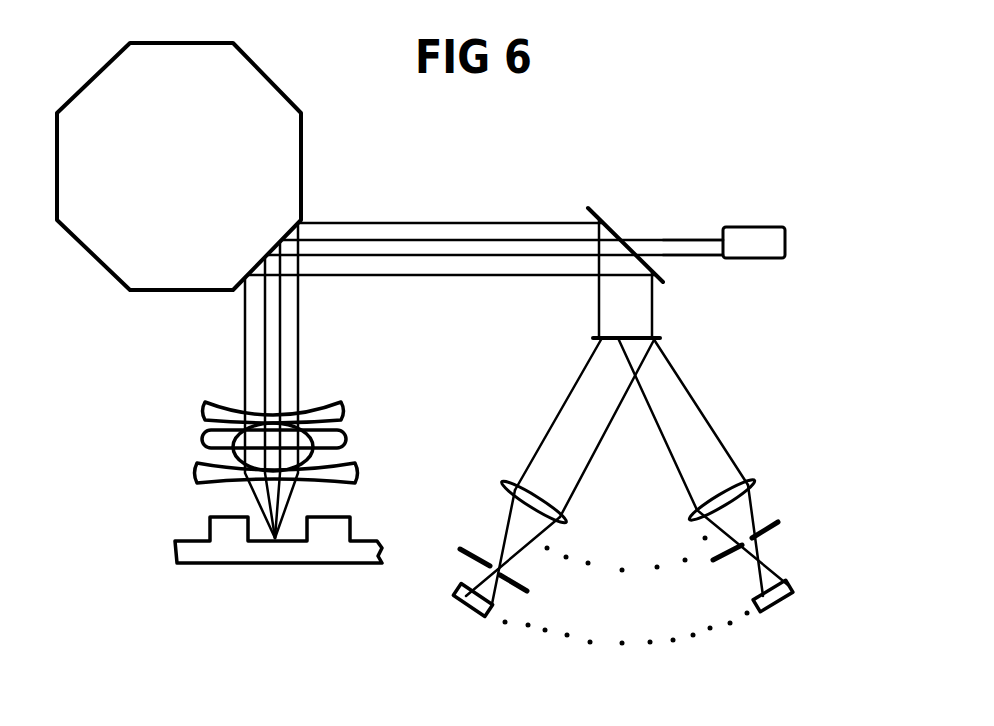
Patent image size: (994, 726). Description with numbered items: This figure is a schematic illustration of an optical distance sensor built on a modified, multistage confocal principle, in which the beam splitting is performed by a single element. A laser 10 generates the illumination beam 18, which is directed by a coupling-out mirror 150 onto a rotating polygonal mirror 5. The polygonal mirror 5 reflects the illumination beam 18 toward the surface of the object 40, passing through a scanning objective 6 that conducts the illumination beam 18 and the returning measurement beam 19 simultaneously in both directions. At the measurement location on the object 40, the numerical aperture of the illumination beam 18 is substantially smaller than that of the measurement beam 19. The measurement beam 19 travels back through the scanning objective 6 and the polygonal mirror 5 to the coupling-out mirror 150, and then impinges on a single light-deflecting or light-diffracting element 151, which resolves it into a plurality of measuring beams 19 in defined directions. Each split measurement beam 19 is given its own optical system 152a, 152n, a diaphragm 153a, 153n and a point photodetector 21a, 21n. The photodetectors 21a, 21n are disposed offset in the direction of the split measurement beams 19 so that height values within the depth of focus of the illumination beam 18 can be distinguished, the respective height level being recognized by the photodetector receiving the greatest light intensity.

The rotating polygonal mirror 5 is at (260, 108).
The measurement beam 19 is at (245, 335).
The coupling-out mirror 150 is at (592, 210).
The illumination beam 18 is at (641, 236).
The laser 10 is at (741, 238).
The single light-deflecting element 151 is at (593, 340).
The scanning objective 6 is at (188, 437).
The object 40 is at (223, 551).
The optical system 152n is at (502, 487).
The optical system 152a is at (777, 467).
The diaphragm 153n is at (462, 552).
The diaphragm 153a is at (777, 527).
The photodetector 21n is at (476, 608).
The photodetector 21a is at (725, 663).